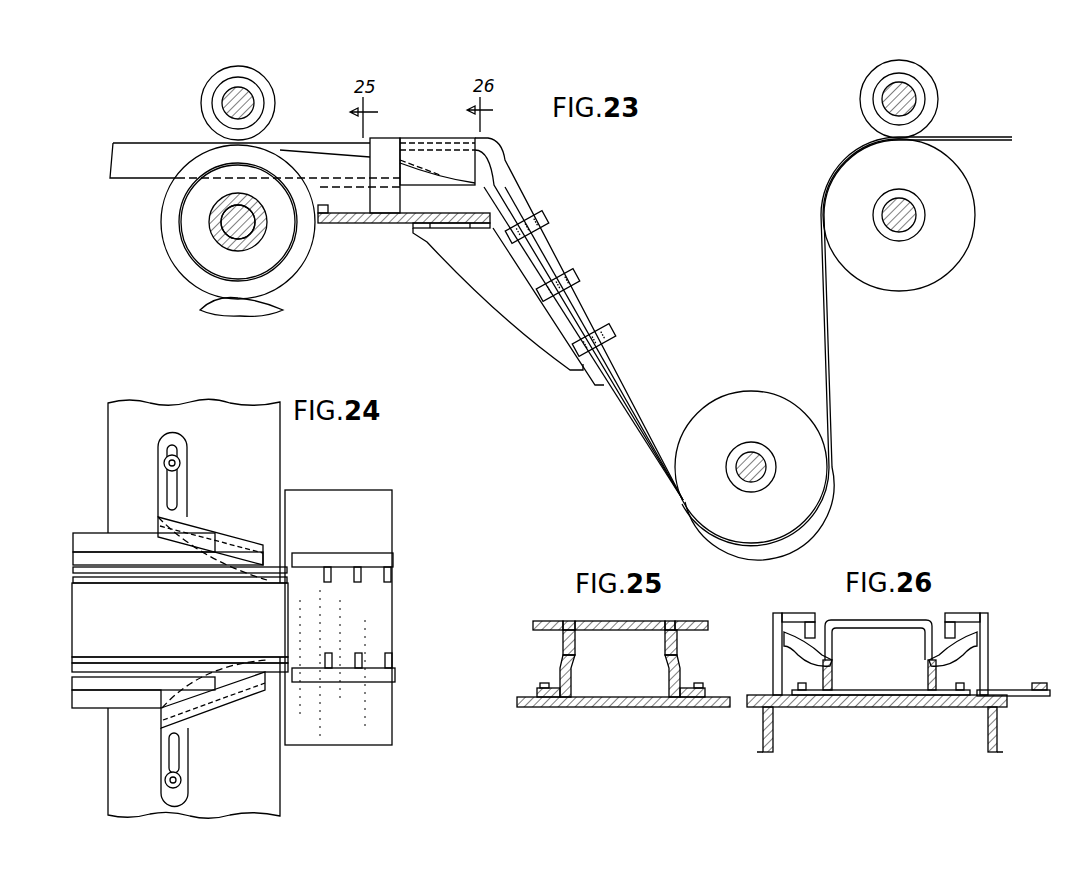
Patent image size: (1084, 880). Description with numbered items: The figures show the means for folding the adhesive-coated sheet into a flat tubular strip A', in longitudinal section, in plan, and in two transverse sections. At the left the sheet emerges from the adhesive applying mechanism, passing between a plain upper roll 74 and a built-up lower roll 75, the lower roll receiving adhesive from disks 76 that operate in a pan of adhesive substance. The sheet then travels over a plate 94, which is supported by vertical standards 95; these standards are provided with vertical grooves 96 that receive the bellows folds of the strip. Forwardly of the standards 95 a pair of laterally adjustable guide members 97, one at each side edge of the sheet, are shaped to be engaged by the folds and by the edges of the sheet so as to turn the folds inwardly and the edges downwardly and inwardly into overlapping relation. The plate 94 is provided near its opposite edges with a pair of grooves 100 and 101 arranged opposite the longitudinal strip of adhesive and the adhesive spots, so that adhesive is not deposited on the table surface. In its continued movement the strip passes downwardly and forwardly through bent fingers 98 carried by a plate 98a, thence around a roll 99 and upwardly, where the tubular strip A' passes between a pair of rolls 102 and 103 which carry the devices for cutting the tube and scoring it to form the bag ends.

In FIG. 23, the plain upper roll 74 is at (203, 96).
In FIG. 23, the built-up lower roll 75 is at (165, 229).
In FIG. 23, the disks 76 is at (275, 308).
In FIG. 24, the plate 94 is at (180, 620).
In FIG. 25, the plate 94 is at (626, 624).
In FIG. 25, the vertical standards 95 is at (572, 679).
In FIG. 26, the vertical standards 95 is at (833, 679).
In FIG. 24, the vertical grooves 96 is at (88, 668).
In FIG. 25, the vertical grooves 96 is at (562, 650).
In FIG. 24, the laterally adjustable guide members 97 is at (198, 527).
In FIG. 26, the laterally adjustable guide members 97 is at (790, 624).
In FIG. 23, the bent fingers 98 is at (540, 222).
In FIG. 24, the bent fingers 98 is at (396, 573).
In FIG. 24, the plate 98a is at (395, 612).
In FIG. 23, the roll 99 is at (744, 398).
In FIG. 24, the groove 100 is at (85, 688).
In FIG. 25, the groove 100 is at (560, 620).
In FIG. 24, the groove 101 is at (88, 657).
In FIG. 25, the groove 101 is at (575, 624).
In FIG. 26, the groove 101 is at (838, 622).
In FIG. 23, the upper roll 102 is at (921, 86).
In FIG. 23, the roll 103 is at (955, 181).
In FIG. 23, the flat tubular strip A' is at (847, 348).